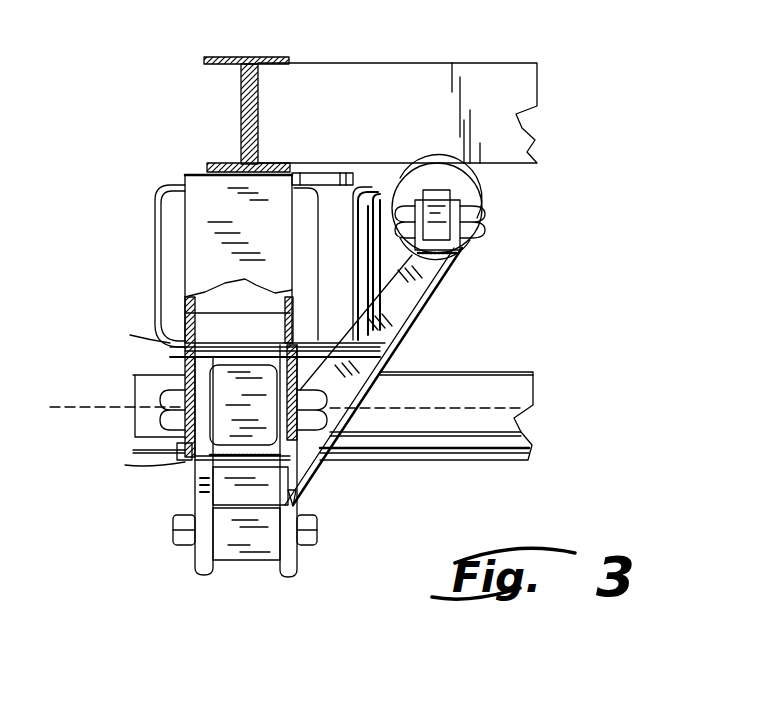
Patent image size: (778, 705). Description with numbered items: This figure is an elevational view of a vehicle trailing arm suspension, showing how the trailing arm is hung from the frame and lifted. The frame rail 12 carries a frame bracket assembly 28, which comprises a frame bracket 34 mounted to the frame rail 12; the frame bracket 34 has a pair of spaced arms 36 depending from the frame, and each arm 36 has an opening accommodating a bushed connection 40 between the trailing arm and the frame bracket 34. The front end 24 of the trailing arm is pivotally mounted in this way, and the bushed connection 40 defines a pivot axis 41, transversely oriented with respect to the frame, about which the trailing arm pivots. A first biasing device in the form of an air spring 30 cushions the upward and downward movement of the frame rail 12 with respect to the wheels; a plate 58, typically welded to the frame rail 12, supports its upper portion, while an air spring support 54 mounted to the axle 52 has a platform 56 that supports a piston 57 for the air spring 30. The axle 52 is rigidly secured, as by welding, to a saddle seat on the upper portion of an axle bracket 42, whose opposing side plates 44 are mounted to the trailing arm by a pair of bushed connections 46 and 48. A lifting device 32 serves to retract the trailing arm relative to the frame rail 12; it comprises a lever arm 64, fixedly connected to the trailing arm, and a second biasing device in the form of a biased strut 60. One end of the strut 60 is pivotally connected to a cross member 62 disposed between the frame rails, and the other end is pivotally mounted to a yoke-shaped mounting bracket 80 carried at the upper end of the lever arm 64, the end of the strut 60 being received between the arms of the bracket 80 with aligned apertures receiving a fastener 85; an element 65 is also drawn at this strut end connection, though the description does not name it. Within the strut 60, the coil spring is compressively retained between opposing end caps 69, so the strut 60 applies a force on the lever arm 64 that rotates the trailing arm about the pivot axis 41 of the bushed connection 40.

The frame rail 12 is at (276, 58).
The cross member 62 is at (424, 72).
The plate 58 is at (178, 174).
The air spring 30 is at (157, 204).
The fastener 85 is at (410, 190).
The strut 60 is at (500, 172).
The end caps 69 is at (487, 196).
The roller bracket 65 is at (472, 211).
The mounting bracket 80 is at (455, 246).
The lever arm 64 is at (400, 320).
The lifting device 32 is at (492, 294).
The axle 52 is at (478, 374).
The pivot axis 41 is at (58, 410).
The arms 36 is at (185, 313).
The frame bracket 34 is at (183, 250).
The frame bracket assembly 28 is at (183, 290).
The piston 57 is at (185, 352).
The platform 56 is at (182, 357).
The air spring support 54 is at (173, 368).
The bushed connection 40 is at (156, 418).
The bushed connection 46 is at (176, 452).
The front end 24 is at (226, 447).
The side plates 44 is at (300, 520).
The axle bracket 42 is at (299, 588).
The bushed connection 48 is at (318, 541).